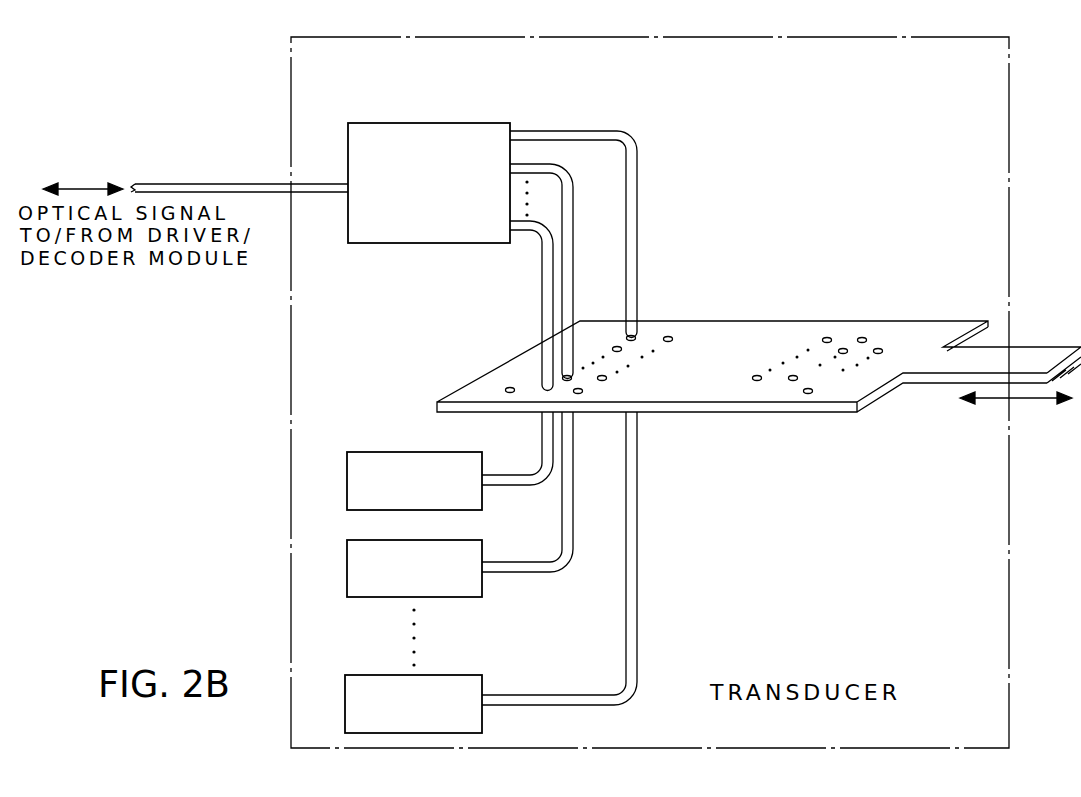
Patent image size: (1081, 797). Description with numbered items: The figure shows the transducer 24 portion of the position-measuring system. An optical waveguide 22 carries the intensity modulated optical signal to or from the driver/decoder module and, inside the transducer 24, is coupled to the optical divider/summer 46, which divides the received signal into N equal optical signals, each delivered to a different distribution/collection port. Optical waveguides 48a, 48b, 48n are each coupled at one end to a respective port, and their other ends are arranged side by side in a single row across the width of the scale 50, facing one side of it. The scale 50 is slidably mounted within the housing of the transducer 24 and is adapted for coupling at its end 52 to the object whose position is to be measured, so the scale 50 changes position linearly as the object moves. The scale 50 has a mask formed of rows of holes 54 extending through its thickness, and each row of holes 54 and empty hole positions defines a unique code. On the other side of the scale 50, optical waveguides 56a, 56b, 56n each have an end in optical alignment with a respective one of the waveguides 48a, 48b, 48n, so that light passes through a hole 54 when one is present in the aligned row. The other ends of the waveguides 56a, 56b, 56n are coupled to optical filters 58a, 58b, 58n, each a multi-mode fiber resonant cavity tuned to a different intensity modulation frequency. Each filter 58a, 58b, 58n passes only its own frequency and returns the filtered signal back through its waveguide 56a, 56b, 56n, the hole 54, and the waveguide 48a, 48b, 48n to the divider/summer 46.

The optical waveguide 22 is at (240, 184).
The transducer 24 is at (291, 68).
The optical divider/summer 46 is at (420, 122).
The optical waveguide 48a is at (540, 258).
The optical waveguide 48b is at (575, 233).
The optical waveguide 48n is at (588, 130).
The scale 50 is at (783, 321).
The end 52 is at (1030, 351).
The holes 54 is at (668, 337).
The optical waveguide 56a is at (538, 453).
The optical waveguide 56b is at (513, 574).
The optical waveguide 56n is at (636, 530).
The optical filter 58a is at (418, 452).
The optical filter 58b is at (387, 598).
The optical filter 58n is at (447, 674).